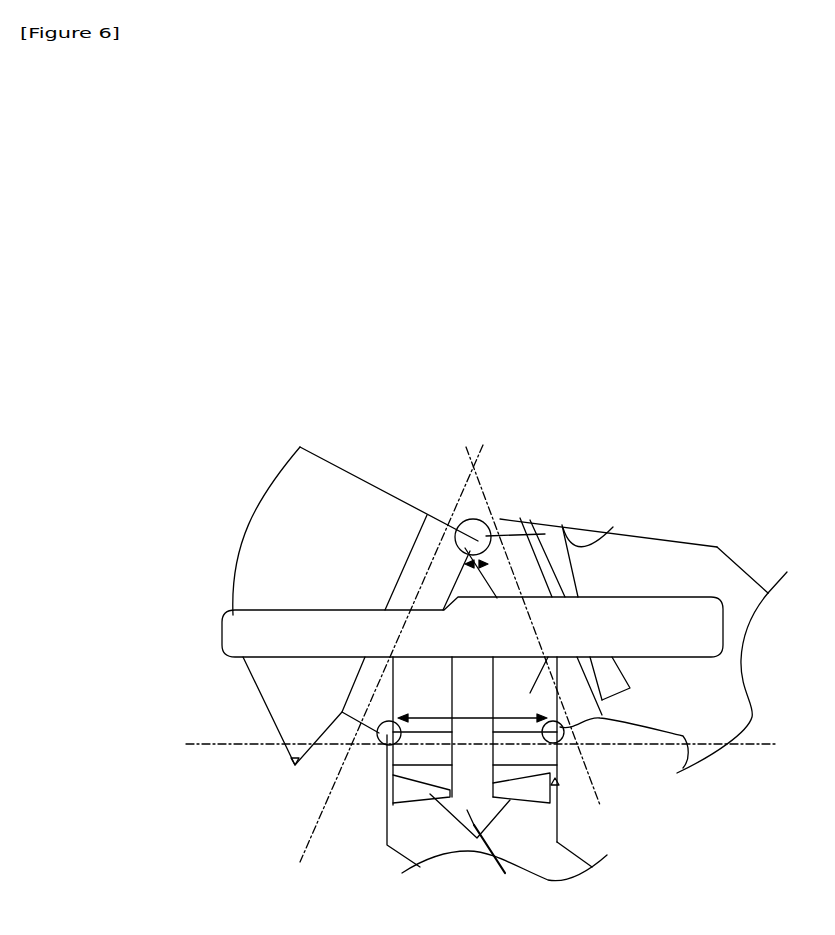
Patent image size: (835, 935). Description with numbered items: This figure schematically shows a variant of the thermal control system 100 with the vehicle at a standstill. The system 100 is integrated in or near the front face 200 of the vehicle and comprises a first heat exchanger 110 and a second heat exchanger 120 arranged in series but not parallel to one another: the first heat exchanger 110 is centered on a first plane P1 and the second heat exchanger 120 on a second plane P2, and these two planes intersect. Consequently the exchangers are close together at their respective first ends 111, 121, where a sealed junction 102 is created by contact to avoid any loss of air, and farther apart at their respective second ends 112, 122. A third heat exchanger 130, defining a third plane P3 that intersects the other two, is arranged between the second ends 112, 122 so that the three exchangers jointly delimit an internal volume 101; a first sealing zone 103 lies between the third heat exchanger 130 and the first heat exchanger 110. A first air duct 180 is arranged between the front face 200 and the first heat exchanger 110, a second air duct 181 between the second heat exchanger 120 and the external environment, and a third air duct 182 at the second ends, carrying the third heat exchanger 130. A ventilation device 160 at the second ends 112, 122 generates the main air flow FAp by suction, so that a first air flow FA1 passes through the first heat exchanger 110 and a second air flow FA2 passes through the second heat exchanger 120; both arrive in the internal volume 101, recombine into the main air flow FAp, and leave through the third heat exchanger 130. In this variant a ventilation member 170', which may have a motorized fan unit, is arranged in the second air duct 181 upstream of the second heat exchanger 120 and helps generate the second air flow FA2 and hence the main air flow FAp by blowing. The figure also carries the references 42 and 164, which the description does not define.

The thermal control system 100 is at (574, 466).
The internal volume 101 is at (472, 705).
The sealed junction 102 is at (567, 525).
The first sealing zone 103 is at (380, 765).
The first heat exchanger 110 is at (368, 752).
The first end of the first heat exchanger 111 is at (429, 514).
The second end of the first heat exchanger 112 is at (351, 714).
The second heat exchanger 120 is at (589, 735).
The first end of the second heat exchanger 121 is at (510, 519).
The second end of the second heat exchanger 122 is at (595, 724).
The third heat exchanger 130 is at (555, 788).
The ventilation device 160 is at (520, 800).
The second elastic plate 164 is at (558, 740).
The ventilation member 170' is at (608, 530).
The first air duct 180 is at (258, 548).
The second air duct 181 is at (694, 700).
The third air duct 182 is at (430, 846).
The front face 200 is at (232, 612).
The pivot pin 42 is at (540, 718).
The first plane P1 is at (462, 483).
The second plane P2 is at (473, 482).
The third plane P3 is at (223, 746).
The first air flow FA1 is at (265, 657).
The second air flow FA2 is at (643, 597).
The main air flow FAp is at (489, 855).